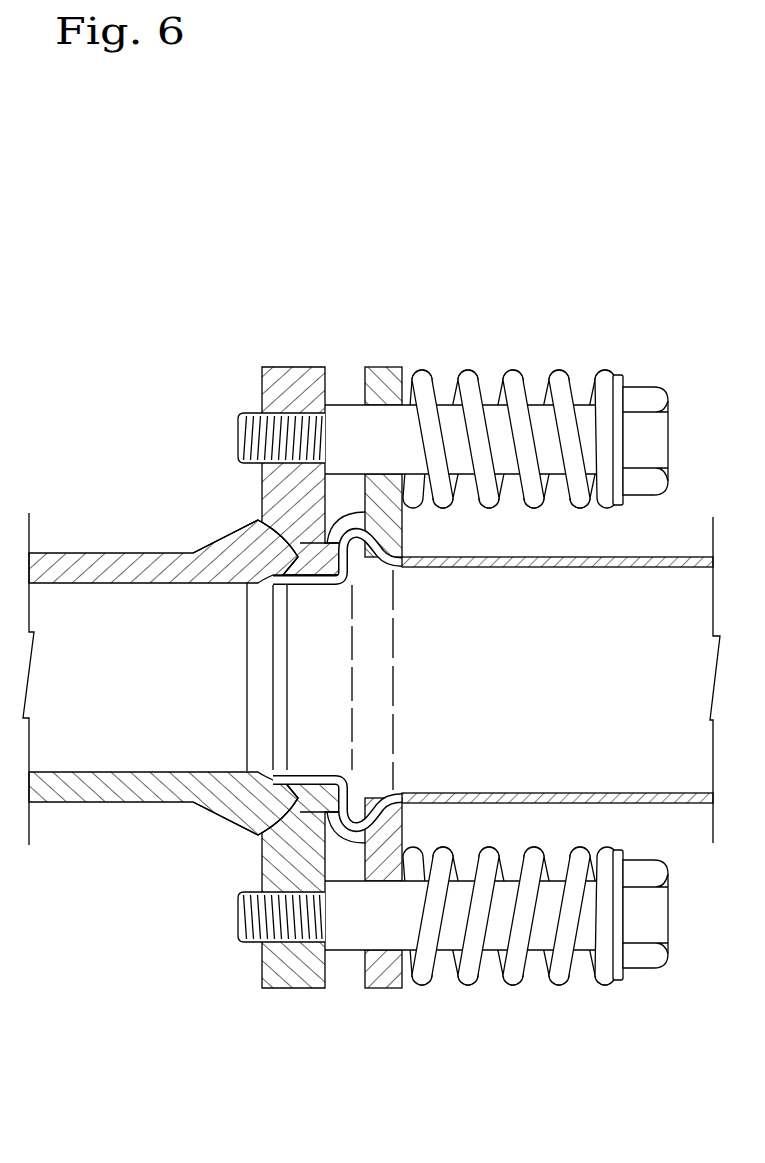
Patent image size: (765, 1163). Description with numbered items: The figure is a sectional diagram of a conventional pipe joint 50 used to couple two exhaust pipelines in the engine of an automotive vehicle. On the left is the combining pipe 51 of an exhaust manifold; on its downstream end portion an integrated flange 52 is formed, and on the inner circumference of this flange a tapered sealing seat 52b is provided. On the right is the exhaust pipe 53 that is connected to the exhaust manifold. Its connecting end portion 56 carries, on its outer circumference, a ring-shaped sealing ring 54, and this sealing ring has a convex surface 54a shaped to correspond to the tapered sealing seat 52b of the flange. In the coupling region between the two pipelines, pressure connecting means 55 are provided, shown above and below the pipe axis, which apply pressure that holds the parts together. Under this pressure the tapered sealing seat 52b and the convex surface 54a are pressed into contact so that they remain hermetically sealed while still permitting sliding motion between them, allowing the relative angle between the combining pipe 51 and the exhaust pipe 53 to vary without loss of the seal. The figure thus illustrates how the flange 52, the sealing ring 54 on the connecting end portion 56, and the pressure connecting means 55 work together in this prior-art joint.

The pipe joint 50 is at (240, 340).
The combining pipe 51 is at (90, 553).
The integrated flange 52 is at (298, 367).
The tapered sealing seat 52b is at (250, 583).
The exhaust pipe 53 is at (671, 556).
The sealing ring 54 is at (262, 522).
The convex surface 54a is at (403, 525).
The pressure connecting means 55 is at (430, 340).
The connecting end portion 56 is at (307, 590).